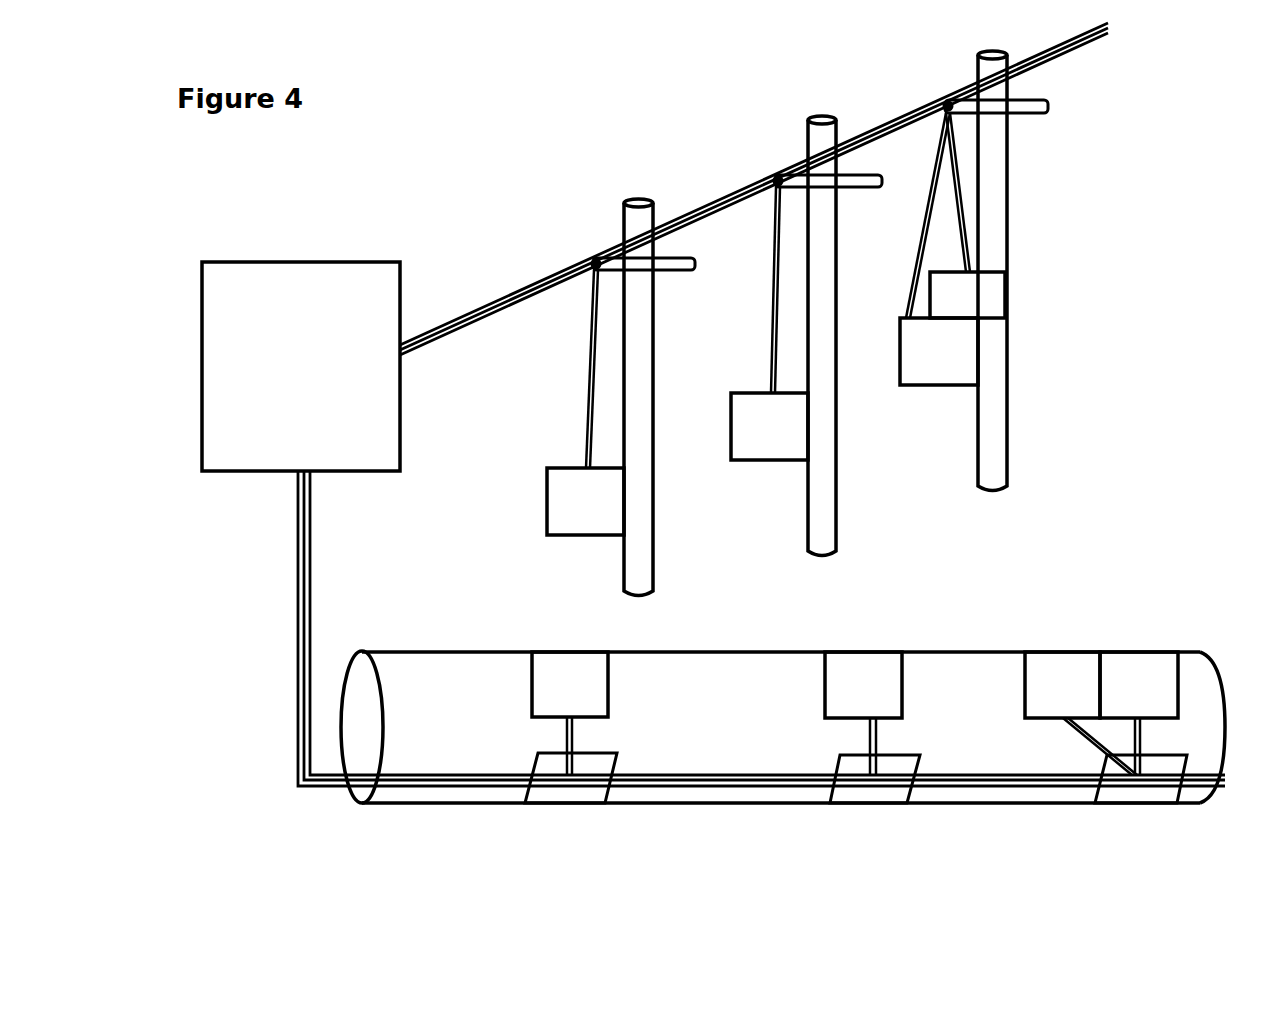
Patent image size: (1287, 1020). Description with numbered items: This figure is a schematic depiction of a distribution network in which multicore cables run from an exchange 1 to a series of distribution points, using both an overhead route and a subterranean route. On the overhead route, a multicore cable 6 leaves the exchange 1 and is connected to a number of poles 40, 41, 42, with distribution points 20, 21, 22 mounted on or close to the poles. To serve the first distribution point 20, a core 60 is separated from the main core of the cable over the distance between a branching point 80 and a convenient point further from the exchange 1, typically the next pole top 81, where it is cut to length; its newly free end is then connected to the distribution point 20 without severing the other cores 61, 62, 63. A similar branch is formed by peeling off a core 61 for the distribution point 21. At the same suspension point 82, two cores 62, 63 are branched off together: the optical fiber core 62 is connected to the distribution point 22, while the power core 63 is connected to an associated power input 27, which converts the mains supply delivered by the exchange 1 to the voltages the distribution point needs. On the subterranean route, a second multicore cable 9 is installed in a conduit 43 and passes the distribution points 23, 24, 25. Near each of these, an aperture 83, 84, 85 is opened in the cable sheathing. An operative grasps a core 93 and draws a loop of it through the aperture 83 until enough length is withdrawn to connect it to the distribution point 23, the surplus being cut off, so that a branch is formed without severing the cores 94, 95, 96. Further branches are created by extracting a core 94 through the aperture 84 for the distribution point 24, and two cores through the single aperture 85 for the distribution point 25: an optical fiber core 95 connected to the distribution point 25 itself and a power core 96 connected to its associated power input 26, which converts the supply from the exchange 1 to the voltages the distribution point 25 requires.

The exchange 1 is at (301, 353).
The overhead cable 6 is at (754, 189).
The ground cable 9 is at (761, 628).
The distribution point 20 is at (585, 516).
The distribution point 21 is at (769, 440).
The distribution point 22 is at (939, 368).
The distribution point 23 is at (552, 684).
The distribution point 24 is at (848, 685).
The distribution point 25 is at (1157, 684).
The power input 26 is at (1045, 685).
The power input 27 is at (987, 295).
The pole 40 is at (657, 397).
The pole 41 is at (846, 336).
The pole 42 is at (1015, 271).
The conduit 43 is at (783, 709).
The core 60 is at (572, 369).
The core 61 is at (760, 290).
The optical fiber core 62 is at (918, 215).
The power core 63 is at (967, 192).
The branching point 80 is at (643, 279).
The pole top 81 is at (828, 195).
The suspension point 82 is at (996, 120).
The aperture 83 is at (571, 793).
The aperture 84 is at (882, 793).
The aperture 85 is at (1147, 793).
The core 93 is at (554, 746).
The core 94 is at (892, 746).
The optical fiber core 95 is at (1157, 746).
The power core 96 is at (1100, 746).